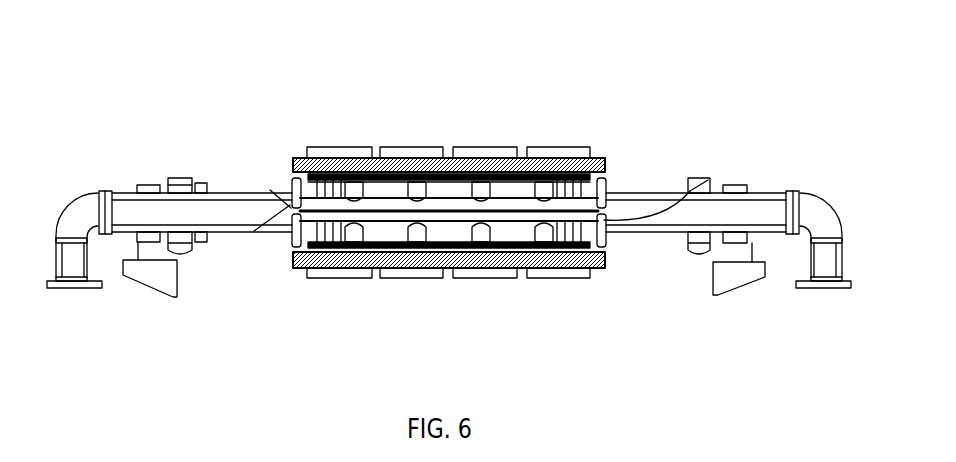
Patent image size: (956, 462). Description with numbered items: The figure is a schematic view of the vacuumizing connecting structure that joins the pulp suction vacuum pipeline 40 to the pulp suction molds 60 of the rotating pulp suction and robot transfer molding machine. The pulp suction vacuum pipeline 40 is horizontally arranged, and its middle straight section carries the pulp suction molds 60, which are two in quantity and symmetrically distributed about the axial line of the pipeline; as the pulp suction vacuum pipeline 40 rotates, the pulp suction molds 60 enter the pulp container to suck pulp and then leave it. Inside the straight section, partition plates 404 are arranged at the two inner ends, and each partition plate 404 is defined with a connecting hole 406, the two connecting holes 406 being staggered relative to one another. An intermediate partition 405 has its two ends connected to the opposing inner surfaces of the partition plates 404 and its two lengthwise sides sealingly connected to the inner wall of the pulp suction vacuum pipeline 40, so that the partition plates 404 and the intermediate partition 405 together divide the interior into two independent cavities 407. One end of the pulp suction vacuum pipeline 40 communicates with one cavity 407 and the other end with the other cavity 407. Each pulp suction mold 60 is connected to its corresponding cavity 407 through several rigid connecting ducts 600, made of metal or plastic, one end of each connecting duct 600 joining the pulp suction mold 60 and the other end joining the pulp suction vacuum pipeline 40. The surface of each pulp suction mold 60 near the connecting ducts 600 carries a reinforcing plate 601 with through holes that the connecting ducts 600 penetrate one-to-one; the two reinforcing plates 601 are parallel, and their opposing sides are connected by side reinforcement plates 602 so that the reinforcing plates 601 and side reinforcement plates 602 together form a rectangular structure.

The pulp suction vacuum pipeline 40 is at (133, 207).
The partition plate 404 is at (607, 200).
The intermediate partition 405 is at (507, 243).
The connecting hole 406 is at (273, 192).
The cavity 407 is at (338, 207).
The pulp suction mold 60 is at (500, 147).
The connecting duct 600 is at (417, 240).
The reinforcing plate 601 is at (375, 250).
The side reinforcement plate 602 is at (387, 190).